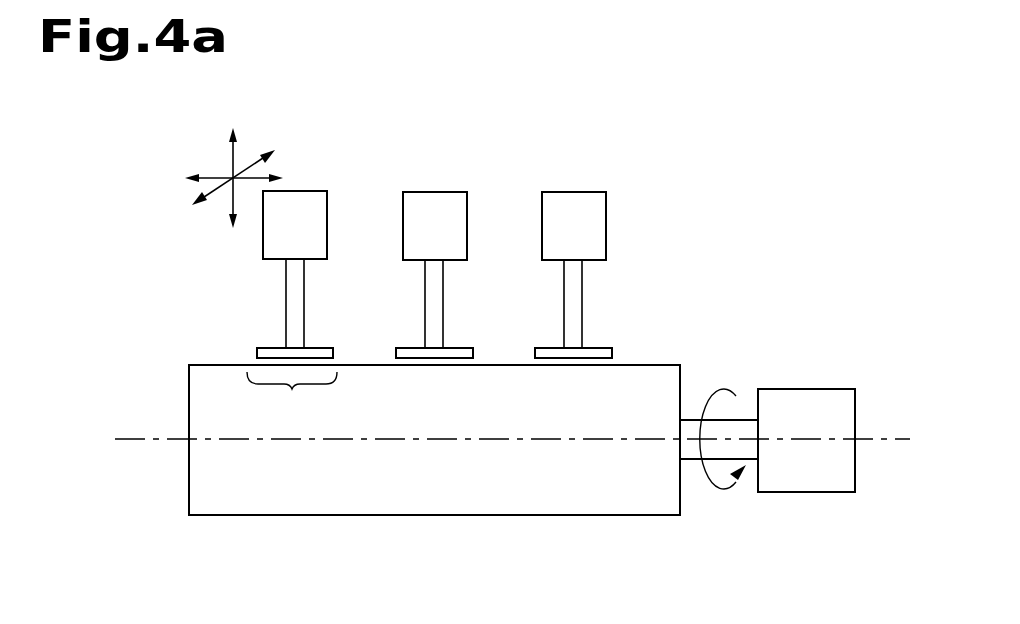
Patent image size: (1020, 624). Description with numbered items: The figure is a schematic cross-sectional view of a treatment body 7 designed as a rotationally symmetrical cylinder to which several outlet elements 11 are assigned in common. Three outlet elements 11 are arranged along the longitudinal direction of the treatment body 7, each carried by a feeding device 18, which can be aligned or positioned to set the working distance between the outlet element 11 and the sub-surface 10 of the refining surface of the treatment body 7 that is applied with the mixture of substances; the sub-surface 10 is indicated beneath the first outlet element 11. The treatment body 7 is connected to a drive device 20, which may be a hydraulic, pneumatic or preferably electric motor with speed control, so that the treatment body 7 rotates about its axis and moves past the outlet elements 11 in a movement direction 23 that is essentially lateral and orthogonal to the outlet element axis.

The treatment body 7 is at (665, 341).
The sub-surface 10 is at (289, 403).
The outlet element 11 is at (573, 303).
The feeding device 18 is at (307, 236).
The drive device 20 is at (807, 400).
The movement direction 23 is at (735, 398).